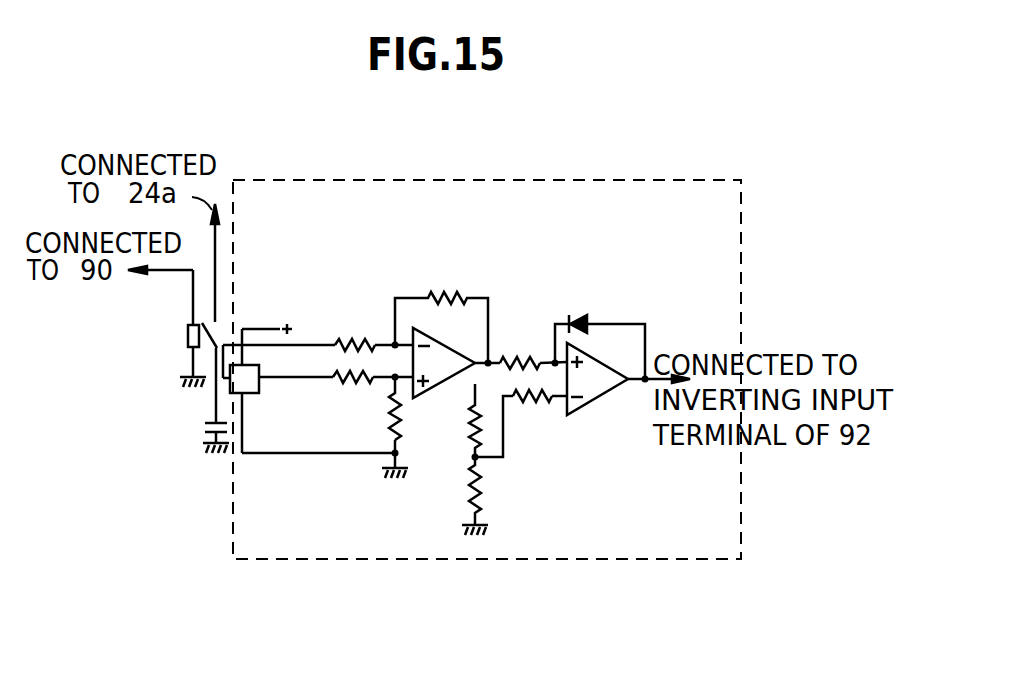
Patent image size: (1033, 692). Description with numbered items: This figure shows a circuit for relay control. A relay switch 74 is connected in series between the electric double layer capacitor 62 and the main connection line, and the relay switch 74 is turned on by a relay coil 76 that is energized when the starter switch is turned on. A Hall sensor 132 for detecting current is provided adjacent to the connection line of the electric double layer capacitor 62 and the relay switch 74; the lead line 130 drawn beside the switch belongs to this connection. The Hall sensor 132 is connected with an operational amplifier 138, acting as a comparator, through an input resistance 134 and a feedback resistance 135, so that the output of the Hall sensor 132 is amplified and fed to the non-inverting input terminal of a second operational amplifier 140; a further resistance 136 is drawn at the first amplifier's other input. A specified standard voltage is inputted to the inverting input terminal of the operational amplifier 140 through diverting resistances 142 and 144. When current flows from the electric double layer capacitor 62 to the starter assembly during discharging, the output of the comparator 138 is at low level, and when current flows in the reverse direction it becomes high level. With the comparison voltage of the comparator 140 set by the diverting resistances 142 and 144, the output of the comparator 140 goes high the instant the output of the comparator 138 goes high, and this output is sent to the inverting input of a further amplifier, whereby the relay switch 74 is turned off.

The electric double layer capacitor 62 is at (205, 427).
The relay switch 74 is at (217, 328).
The relay coil 76 is at (188, 336).
The lead line 130 is at (213, 392).
The Hall sensor 132 is at (259, 388).
The input resistance 134 is at (362, 338).
The feedback resistance 135 is at (443, 292).
The resistor 136 is at (390, 412).
The operational amplifier 138 is at (460, 336).
The operational amplifier 140 is at (602, 398).
The diverting resistance 142 is at (468, 428).
The diverting resistance 144 is at (482, 482).